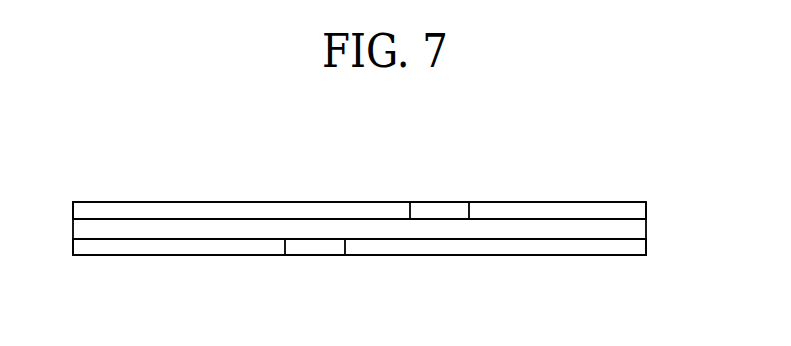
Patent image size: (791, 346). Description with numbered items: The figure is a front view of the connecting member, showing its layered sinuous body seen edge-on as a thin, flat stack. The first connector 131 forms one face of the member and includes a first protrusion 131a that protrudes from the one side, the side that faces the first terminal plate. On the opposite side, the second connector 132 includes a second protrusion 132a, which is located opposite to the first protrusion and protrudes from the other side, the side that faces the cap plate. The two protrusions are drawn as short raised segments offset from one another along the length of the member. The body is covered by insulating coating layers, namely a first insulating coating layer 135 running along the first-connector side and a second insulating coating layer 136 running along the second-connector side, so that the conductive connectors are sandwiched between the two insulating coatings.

The first insulating coating layer 135 is at (178, 210).
The first connector 131 is at (451, 183).
The first protrusion 131a is at (443, 210).
The second insulating coating layer 136 is at (128, 248).
The second connector 132 is at (316, 276).
The second protrusion 132a is at (315, 248).